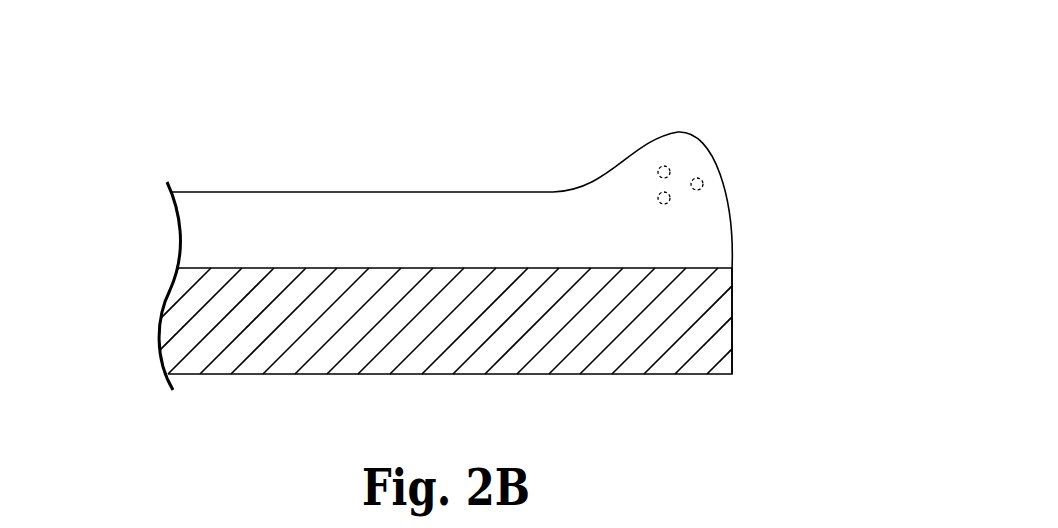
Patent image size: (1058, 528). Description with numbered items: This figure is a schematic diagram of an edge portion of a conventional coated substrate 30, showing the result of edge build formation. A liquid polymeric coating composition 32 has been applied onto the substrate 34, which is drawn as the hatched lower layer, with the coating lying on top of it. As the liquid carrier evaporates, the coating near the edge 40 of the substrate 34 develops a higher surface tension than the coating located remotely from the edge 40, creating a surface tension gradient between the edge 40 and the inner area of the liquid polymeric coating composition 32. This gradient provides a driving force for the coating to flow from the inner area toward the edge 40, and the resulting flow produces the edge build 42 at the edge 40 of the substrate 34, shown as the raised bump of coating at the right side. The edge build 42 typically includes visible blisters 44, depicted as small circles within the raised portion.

The coated substrate 30 is at (413, 254).
The liquid polymeric coating composition 32 is at (485, 161).
The substrate 34 is at (443, 362).
The edge 40 is at (733, 348).
The edge build 42 is at (678, 131).
The blisters 44 is at (705, 178).